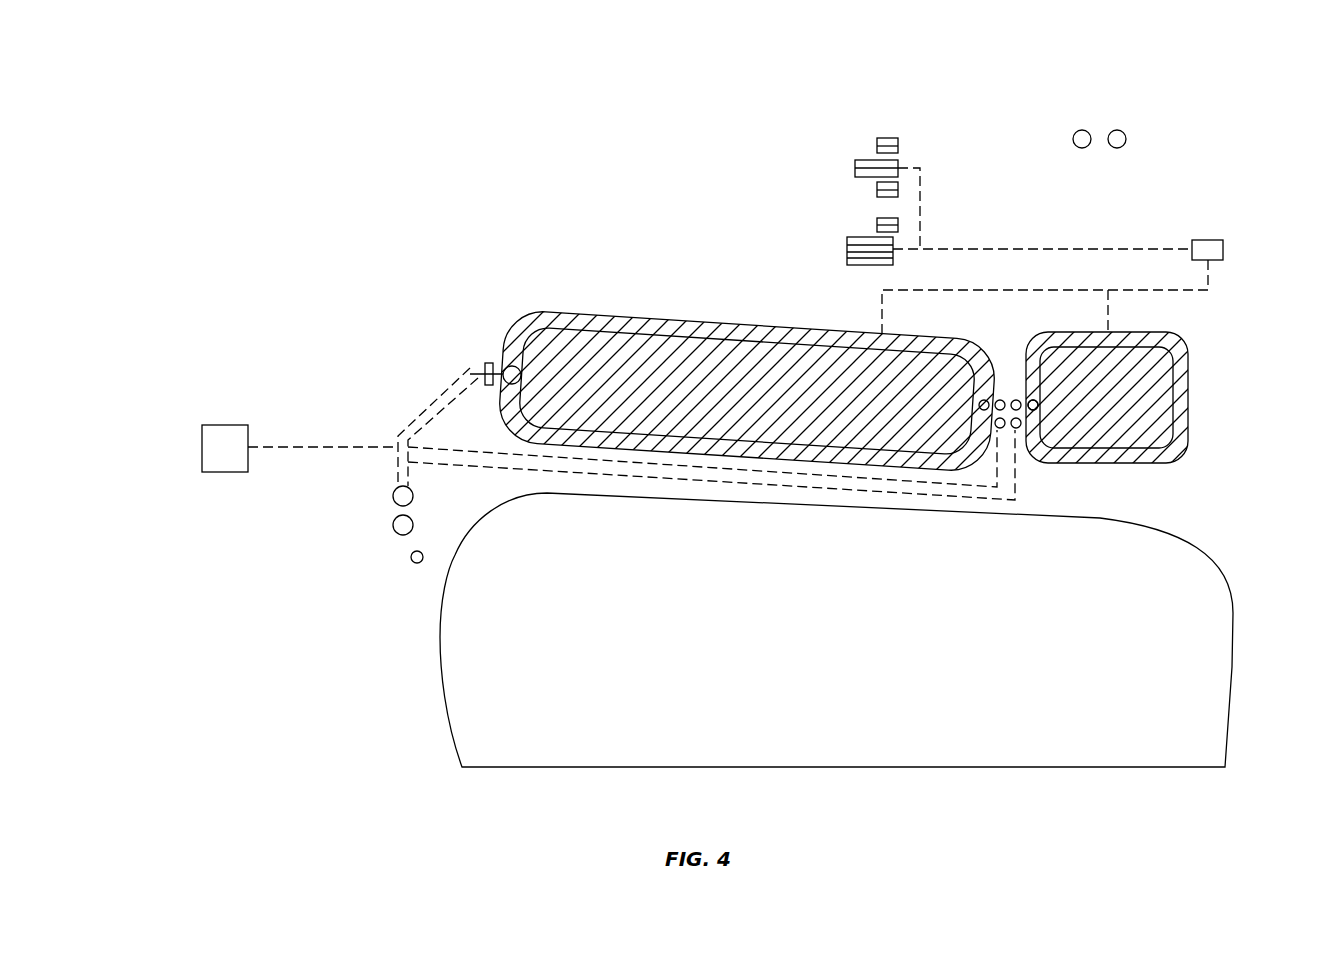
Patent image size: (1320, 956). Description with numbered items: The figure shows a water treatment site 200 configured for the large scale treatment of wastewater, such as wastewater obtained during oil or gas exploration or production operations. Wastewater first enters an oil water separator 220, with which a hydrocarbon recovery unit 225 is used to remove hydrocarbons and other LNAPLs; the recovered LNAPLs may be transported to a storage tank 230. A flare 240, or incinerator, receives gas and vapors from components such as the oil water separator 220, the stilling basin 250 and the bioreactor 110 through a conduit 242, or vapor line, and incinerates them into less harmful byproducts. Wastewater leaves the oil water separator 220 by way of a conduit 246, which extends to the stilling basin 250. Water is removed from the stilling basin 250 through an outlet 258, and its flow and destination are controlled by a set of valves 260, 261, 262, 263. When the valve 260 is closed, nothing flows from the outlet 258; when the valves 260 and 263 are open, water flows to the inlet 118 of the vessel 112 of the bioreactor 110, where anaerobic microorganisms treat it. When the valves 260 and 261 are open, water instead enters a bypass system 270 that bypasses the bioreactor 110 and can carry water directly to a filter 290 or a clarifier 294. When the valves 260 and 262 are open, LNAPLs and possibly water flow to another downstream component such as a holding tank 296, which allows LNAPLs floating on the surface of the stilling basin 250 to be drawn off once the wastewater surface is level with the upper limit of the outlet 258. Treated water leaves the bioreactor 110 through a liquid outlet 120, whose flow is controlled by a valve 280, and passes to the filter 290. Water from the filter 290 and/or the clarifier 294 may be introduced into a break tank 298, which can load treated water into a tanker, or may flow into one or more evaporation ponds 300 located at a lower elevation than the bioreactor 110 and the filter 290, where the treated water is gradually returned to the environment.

The water treatment site 200 is at (314, 136).
The bioreactor 110 is at (603, 315).
The vessel 112 is at (773, 363).
The inlet 118 is at (982, 400).
The liquid outlet 120 is at (503, 367).
The oil water separator 220 is at (847, 248).
The hydrocarbon recovery unit 225 is at (898, 225).
The storage tank 230 is at (1115, 130).
The flare 240 is at (1208, 240).
The conduit 242 is at (1098, 249).
The conduit 246 is at (1163, 290).
The stilling basin 250 is at (1188, 383).
The outlet 258 is at (1034, 411).
The valve 260 is at (1033, 400).
The valve 261 is at (1017, 429).
The valve 262 is at (1015, 400).
The valve 263 is at (998, 400).
The bypass system 270 is at (505, 468).
The valve 280 is at (485, 365).
The filter 290 is at (392, 527).
The clarifier 294 is at (392, 497).
The holding tank 296 is at (202, 447).
The break tank 298 is at (411, 560).
The evaporation pond 300 is at (440, 640).